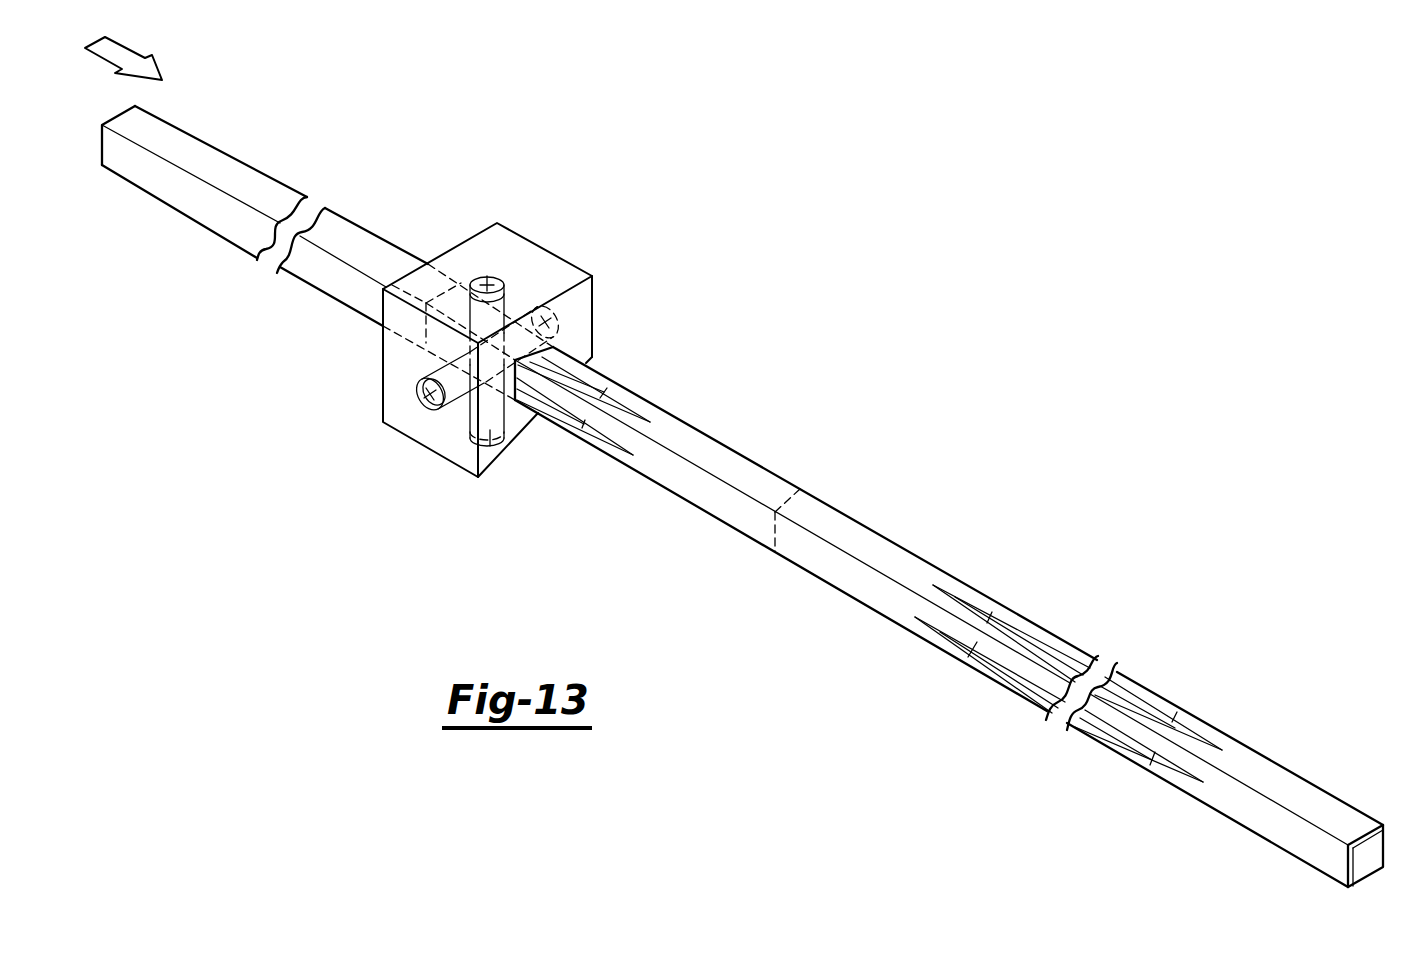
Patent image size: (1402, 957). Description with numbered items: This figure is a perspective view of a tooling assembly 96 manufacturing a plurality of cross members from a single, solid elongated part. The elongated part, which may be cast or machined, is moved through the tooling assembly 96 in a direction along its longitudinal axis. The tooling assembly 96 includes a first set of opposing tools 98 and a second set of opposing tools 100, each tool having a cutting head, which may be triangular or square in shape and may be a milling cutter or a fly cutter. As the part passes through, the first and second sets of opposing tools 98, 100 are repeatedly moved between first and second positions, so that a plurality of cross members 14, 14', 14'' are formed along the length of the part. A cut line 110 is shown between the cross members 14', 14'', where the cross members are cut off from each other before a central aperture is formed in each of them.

The cross member 14 is at (1225, 757).
The cross member 14' is at (1006, 589).
The cross member 14'' is at (599, 408).
The tooling assembly 96 is at (540, 218).
The first set of opposing tools 98 is at (412, 397).
The second set of opposing tools 100 is at (487, 273).
The cut line 110 is at (795, 500).